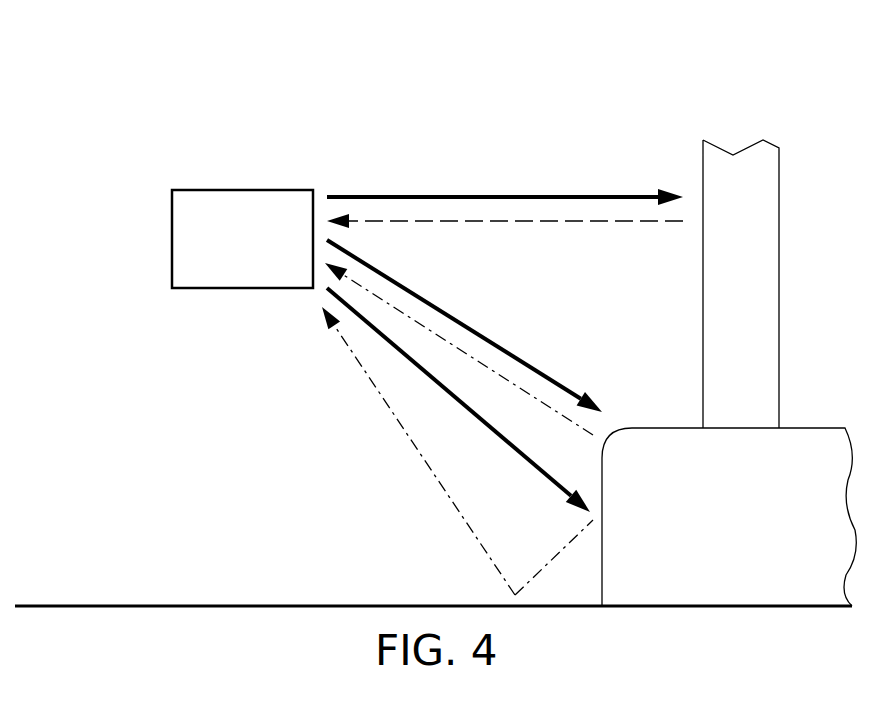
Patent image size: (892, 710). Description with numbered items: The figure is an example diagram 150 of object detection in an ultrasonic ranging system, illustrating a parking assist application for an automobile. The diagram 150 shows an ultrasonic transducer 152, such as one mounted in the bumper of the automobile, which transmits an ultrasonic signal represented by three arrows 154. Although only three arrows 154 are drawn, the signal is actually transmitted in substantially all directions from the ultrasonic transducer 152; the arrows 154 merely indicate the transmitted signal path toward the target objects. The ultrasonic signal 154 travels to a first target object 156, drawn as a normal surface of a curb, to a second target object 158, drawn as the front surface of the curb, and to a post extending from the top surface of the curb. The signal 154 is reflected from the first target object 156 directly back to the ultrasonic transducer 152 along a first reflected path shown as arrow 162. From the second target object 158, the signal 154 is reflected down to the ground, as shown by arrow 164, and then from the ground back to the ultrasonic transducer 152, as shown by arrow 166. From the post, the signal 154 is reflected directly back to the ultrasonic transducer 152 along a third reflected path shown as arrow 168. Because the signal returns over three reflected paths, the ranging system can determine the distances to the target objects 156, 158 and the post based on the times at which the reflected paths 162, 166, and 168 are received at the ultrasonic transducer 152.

The diagram 150 is at (669, 62).
The ultrasonic transducer 152 is at (242, 188).
The arrows 154 is at (493, 194).
The first target object 156 is at (642, 455).
The second target object 158 is at (634, 539).
The arrow 162 is at (490, 370).
The arrow 164 is at (567, 547).
The arrow 166 is at (450, 493).
The arrow 168 is at (613, 222).